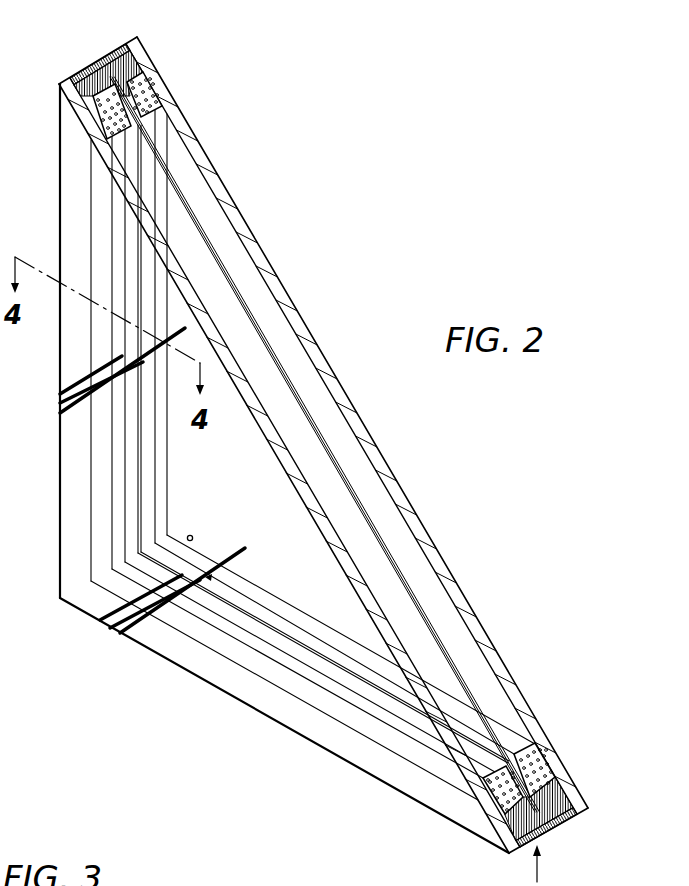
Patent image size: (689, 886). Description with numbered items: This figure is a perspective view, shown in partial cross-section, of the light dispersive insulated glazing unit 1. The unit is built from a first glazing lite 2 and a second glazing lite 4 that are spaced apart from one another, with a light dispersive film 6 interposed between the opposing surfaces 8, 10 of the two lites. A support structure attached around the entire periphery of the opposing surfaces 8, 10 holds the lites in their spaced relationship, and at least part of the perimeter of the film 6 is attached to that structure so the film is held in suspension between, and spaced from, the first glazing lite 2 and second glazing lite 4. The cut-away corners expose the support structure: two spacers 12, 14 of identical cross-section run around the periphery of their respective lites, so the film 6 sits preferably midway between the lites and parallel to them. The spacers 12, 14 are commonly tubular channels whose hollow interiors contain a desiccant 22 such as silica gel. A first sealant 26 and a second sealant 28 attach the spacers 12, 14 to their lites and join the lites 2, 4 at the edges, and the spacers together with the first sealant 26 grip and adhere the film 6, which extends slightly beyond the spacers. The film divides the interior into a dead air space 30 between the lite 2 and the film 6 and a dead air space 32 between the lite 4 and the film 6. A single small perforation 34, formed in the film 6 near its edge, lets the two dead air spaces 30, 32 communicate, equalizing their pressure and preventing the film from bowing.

The light dispersive insulated glazing unit 1 is at (398, 445).
The first glazing lite 2 is at (264, 255).
The second glazing lite 4 is at (280, 465).
The light dispersive film 6 is at (280, 372).
The opposing surface of first lite 8 is at (363, 496).
The opposing surface of second lite 10 is at (328, 494).
The spacer 12 is at (160, 86).
The spacer 14 is at (90, 116).
The desiccant 22 is at (164, 101).
The first sealant 26 is at (138, 62).
The second sealant 28 is at (119, 45).
The dead air space 30 is at (414, 564).
The dead air space 32 is at (385, 585).
The perforation 34 is at (191, 535).